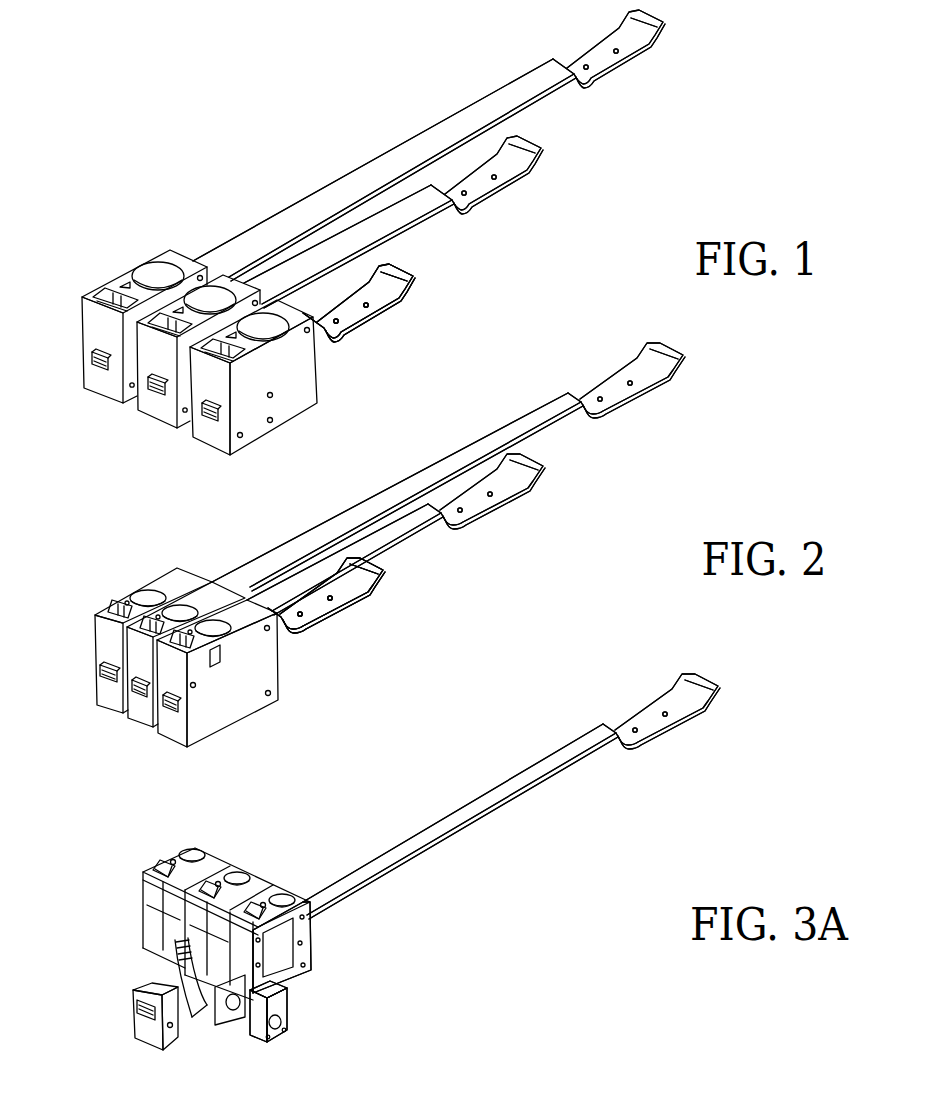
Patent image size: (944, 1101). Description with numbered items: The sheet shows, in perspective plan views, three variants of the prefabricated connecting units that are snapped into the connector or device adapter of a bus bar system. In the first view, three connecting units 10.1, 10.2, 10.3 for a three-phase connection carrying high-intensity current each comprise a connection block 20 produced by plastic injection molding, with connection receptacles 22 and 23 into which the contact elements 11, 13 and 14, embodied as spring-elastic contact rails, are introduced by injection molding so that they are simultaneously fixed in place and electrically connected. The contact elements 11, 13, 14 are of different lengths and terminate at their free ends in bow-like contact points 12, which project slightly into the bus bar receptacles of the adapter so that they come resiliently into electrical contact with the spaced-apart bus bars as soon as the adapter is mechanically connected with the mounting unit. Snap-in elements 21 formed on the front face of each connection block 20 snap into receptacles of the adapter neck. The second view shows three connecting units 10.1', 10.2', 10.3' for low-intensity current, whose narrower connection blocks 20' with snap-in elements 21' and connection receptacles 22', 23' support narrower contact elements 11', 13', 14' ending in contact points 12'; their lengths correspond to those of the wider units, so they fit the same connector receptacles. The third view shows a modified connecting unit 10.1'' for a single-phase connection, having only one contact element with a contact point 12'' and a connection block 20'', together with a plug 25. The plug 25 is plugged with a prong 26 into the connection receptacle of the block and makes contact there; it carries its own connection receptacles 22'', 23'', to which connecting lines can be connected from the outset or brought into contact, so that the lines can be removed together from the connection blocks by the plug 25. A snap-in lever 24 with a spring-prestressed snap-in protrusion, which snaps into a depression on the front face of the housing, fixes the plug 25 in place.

In FIG. 1, the connecting unit 10.1 is at (429, 140).
In FIG. 1, the connecting unit 10.2 is at (453, 222).
In FIG. 1, the connecting unit 10.3 is at (427, 303).
In FIG. 1, the contact element 11 is at (384, 170).
In FIG. 1, the contact point 12 is at (498, 183).
In FIG. 1, the contact element 13 is at (356, 246).
In FIG. 1, the contact element 14 is at (359, 325).
In FIG. 1, the connection block 20 is at (236, 323).
In FIG. 1, the snap-in element 21 is at (122, 406).
In FIG. 1, the connection receptacle 22 is at (212, 276).
In FIG. 1, the connection receptacle 23 is at (154, 293).
In FIG. 2, the connecting unit 10.1' is at (485, 467).
In FIG. 2, the connecting unit 10.2' is at (449, 534).
In FIG. 2, the connecting unit 10.3' is at (375, 601).
In FIG. 2, the contact element 11' is at (400, 492).
In FIG. 3A, the contact element 11' is at (460, 821).
In FIG. 2, the contact point 12' is at (487, 505).
In FIG. 2, the contact element 13' is at (351, 559).
In FIG. 2, the contact element 14' is at (326, 623).
In FIG. 2, the connection block 20' is at (199, 630).
In FIG. 2, the snap-in element 21' is at (140, 717).
In FIG. 2, the connection receptacle 22' is at (168, 585).
In FIG. 2, the connection receptacle 23' is at (128, 596).
In FIG. 3A, the connecting unit 10.1'' is at (511, 796).
In FIG. 3A, the contact point 12'' is at (671, 716).
In FIG. 3A, the connection block 20'' is at (227, 904).
In FIG. 3A, the connection receptacle 22'' is at (221, 856).
In FIG. 3A, the connection receptacle 23'' is at (214, 895).
In FIG. 3A, the snap-in lever 24 is at (196, 1018).
In FIG. 3A, the plug 25 is at (325, 992).
In FIG. 3A, the prong 26 is at (288, 1008).